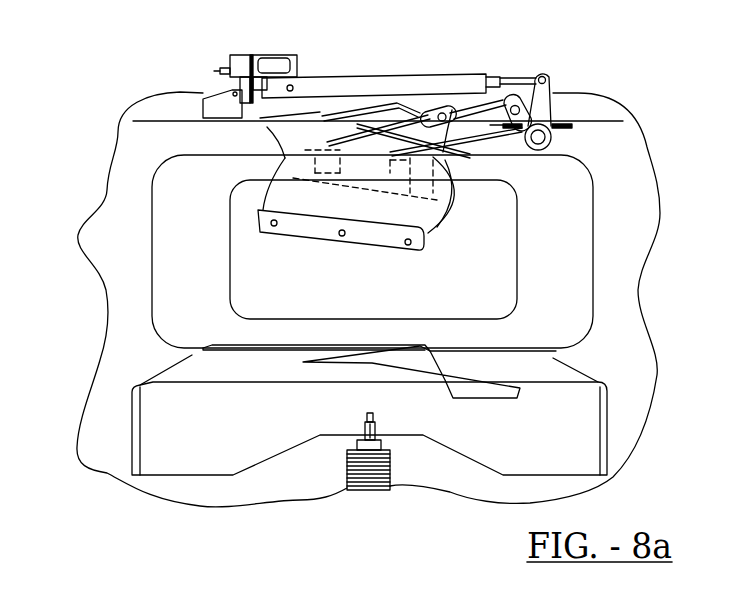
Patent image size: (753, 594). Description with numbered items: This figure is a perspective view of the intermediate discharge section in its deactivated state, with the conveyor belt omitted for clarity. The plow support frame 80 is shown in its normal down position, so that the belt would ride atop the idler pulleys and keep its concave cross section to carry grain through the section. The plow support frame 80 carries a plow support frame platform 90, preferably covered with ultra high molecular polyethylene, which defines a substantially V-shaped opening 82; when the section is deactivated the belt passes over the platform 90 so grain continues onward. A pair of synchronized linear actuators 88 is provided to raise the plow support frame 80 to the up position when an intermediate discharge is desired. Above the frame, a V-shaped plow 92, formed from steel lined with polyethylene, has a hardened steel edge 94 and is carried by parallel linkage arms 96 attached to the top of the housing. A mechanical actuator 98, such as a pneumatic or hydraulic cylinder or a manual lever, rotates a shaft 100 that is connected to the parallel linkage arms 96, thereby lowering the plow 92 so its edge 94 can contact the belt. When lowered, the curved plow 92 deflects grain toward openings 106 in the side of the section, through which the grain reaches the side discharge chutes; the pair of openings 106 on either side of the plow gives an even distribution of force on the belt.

The plow support frame 80 is at (163, 417).
The V-shaped opening 82 is at (460, 397).
The synchronized linear actuators 88 is at (345, 483).
The plow support frame platform 90 is at (517, 358).
The V-shaped plow 92 is at (307, 143).
The hardened steel edge 94 is at (307, 233).
The parallel linkage arms 96 is at (507, 113).
The mechanical actuator 98 is at (284, 55).
The shaft 100 is at (548, 147).
The openings 106 is at (563, 203).